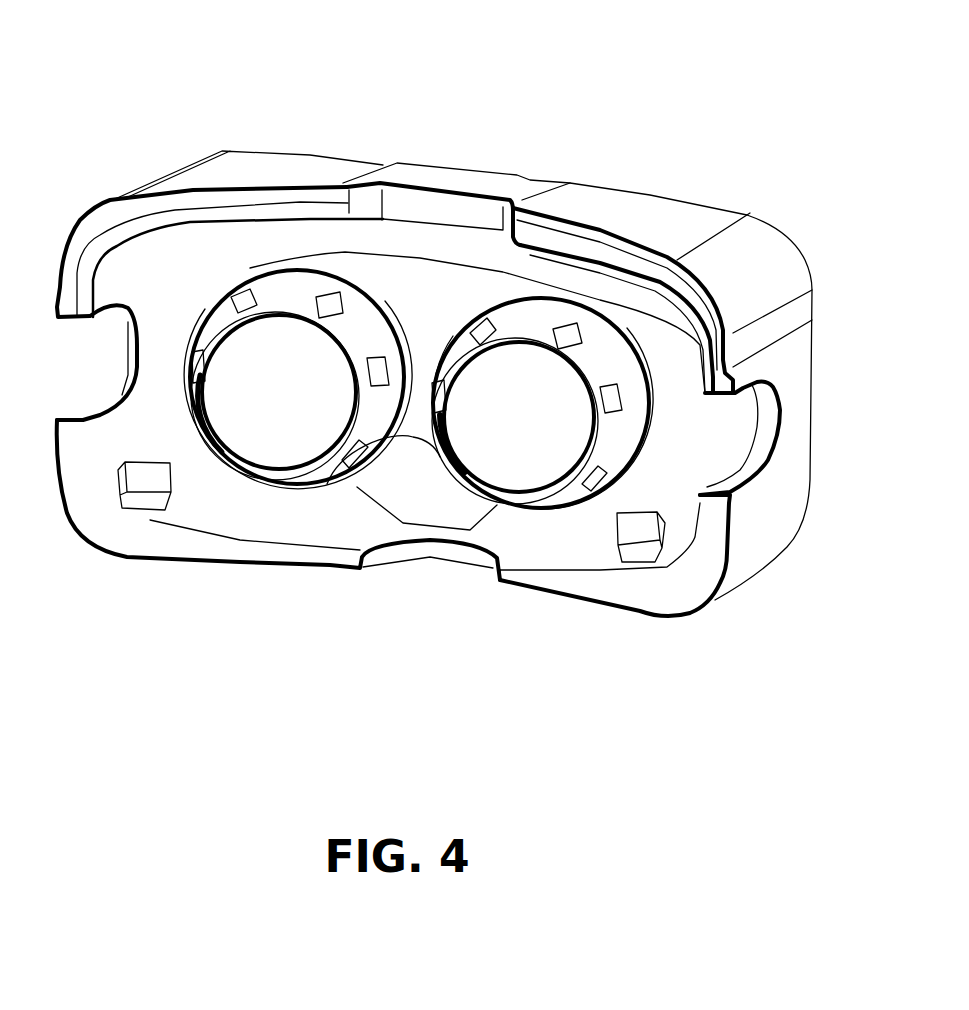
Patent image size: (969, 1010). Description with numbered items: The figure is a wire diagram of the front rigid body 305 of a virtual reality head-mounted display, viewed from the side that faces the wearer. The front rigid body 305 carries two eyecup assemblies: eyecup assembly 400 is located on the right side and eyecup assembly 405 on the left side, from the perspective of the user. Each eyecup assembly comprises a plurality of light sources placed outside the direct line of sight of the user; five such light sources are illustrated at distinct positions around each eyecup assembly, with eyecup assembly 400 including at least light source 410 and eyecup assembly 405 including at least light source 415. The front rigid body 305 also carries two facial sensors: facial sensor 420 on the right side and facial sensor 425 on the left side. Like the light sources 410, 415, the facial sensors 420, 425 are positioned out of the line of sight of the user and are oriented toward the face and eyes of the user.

The front rigid body 305 is at (458, 170).
The eyecup assembly 400 is at (617, 333).
The eyecup assembly 405 is at (290, 272).
The light source 410 is at (568, 324).
The light source 415 is at (240, 298).
The facial sensor 420 is at (640, 562).
The facial sensor 425 is at (145, 508).